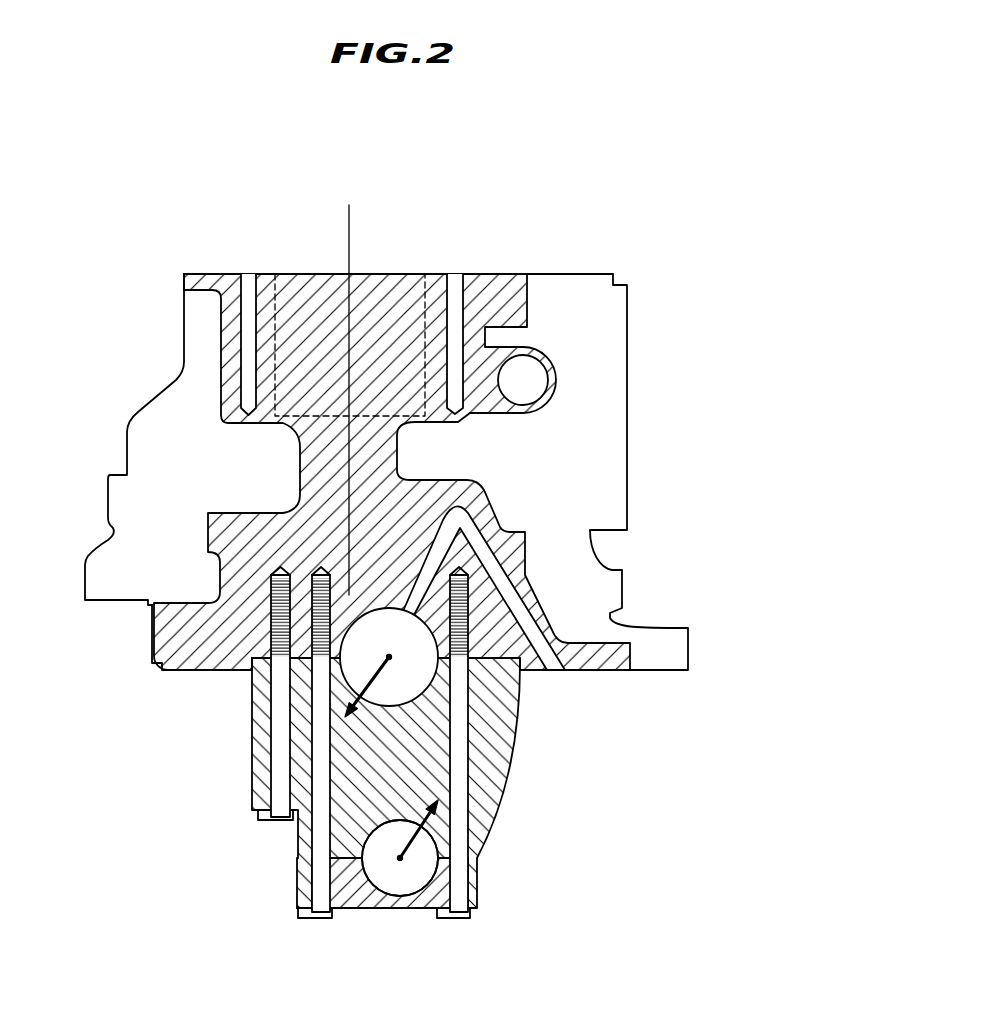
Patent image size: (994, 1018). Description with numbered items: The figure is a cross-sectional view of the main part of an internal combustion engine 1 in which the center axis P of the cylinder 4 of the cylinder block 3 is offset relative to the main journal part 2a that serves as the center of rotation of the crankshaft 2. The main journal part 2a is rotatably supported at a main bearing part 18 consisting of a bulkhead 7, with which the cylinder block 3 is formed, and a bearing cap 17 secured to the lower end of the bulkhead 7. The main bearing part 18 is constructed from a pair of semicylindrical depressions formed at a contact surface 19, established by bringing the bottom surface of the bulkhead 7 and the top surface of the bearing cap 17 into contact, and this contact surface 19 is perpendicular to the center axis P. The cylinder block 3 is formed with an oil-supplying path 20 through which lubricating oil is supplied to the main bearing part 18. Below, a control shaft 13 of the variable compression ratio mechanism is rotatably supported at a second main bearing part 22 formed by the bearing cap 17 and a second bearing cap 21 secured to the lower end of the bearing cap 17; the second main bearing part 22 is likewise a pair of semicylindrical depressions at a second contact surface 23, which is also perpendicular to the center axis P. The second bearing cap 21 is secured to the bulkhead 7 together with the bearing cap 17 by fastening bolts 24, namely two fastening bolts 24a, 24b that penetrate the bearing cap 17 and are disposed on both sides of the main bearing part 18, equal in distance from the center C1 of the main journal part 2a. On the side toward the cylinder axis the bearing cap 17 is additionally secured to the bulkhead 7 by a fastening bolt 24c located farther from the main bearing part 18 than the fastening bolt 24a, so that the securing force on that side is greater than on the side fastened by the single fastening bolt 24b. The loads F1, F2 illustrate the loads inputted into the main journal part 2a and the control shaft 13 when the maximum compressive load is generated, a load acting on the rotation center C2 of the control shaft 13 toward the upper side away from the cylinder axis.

The internal combustion engine 1 is at (668, 352).
The cylinder block 3 is at (607, 477).
The cylinder 4 is at (425, 318).
The center axis P is at (349, 233).
The oil-supplying path 20 is at (530, 623).
The crankshaft 2 is at (494, 685).
The main journal part 2a is at (494, 685).
The main bearing part 18 is at (418, 676).
The center of main journal part C1 is at (389, 657).
The load F1 is at (397, 708).
The bulkhead 7 is at (178, 673).
The contact surface 19 is at (250, 672).
The bearing cap 17 is at (255, 785).
The second bearing cap 21 is at (360, 902).
The second main bearing part 22 is at (387, 887).
The second contact surface 23 is at (343, 902).
The control shaft 13 is at (402, 883).
The rotation center of control shaft C2 is at (400, 858).
The load F2 is at (445, 836).
The fastening bolts 24 is at (371, 909).
The fastening bolt 24a is at (312, 920).
The fastening bolt 24b is at (457, 920).
The fastening bolt 24c is at (272, 817).